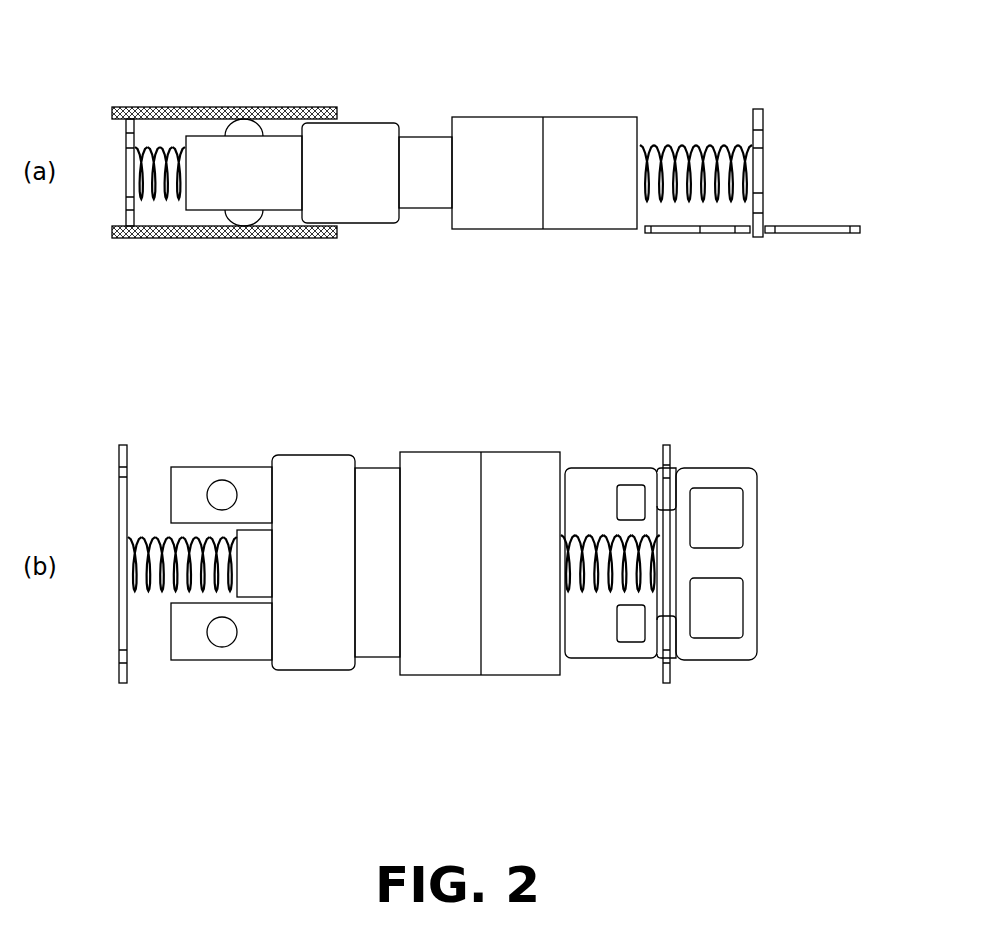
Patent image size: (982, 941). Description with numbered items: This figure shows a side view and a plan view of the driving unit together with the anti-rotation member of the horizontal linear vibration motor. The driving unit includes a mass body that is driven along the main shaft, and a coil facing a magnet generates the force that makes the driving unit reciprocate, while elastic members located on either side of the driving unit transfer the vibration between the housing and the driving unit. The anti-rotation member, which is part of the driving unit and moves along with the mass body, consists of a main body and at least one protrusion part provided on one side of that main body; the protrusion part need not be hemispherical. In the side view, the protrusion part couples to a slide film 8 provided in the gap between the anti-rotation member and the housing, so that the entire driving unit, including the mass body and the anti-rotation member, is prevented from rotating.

The slide film 8 is at (115, 230).